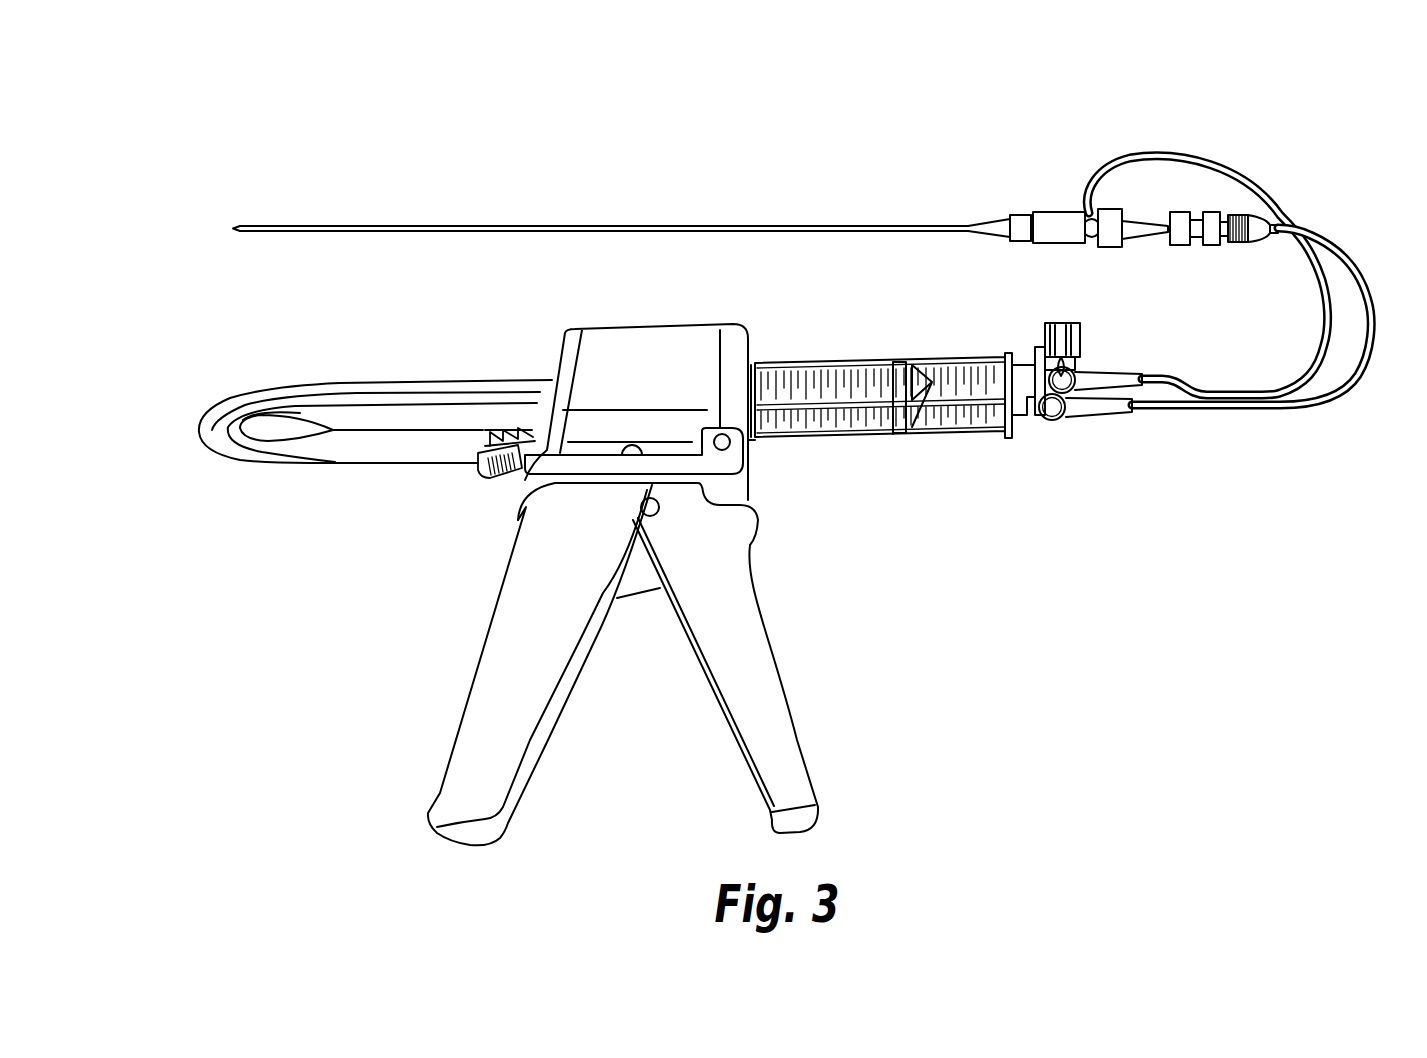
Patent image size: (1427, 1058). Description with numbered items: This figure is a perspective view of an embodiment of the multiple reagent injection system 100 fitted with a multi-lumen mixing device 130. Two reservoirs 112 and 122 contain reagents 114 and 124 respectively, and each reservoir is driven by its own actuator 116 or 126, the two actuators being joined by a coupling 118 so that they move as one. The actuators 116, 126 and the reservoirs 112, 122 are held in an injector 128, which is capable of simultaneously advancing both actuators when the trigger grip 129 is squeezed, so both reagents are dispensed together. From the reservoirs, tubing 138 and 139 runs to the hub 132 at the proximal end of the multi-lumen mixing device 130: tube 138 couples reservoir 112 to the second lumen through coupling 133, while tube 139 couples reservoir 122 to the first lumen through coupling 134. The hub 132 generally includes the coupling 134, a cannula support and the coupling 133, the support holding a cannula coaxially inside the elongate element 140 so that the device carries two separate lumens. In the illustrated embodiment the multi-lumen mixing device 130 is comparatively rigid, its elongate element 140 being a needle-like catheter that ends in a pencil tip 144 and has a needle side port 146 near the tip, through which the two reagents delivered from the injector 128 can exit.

The system 100 is at (626, 566).
The reservoir 112 is at (893, 362).
The reagent 114 is at (962, 378).
The actuator 116 is at (331, 424).
The coupling 118 is at (197, 424).
The reservoir 122 is at (811, 437).
The reagent 124 is at (953, 428).
The actuator 126 is at (400, 444).
The injector 128 is at (560, 713).
The trigger grip 129 is at (770, 712).
The multi-lumen mixing device 130 is at (709, 183).
The hub 132 is at (1230, 232).
The coupling 133 is at (1245, 212).
The coupling 134 is at (1062, 245).
The tube 138 is at (1366, 280).
The tube 139 is at (1153, 156).
The elongate element 140 is at (776, 226).
The pencil tip 144 is at (233, 228).
The needle side port 146 is at (283, 226).